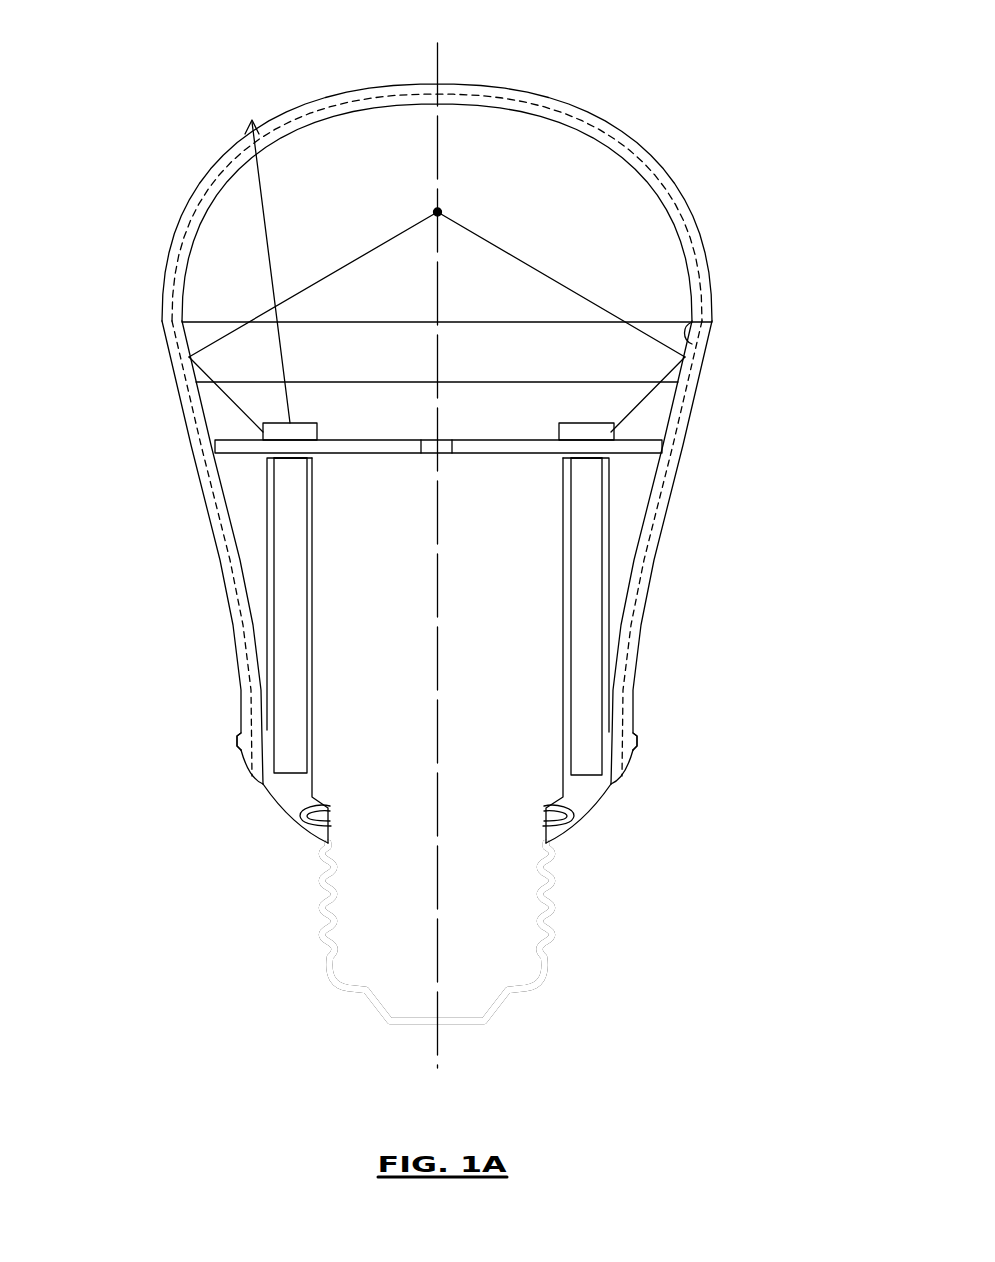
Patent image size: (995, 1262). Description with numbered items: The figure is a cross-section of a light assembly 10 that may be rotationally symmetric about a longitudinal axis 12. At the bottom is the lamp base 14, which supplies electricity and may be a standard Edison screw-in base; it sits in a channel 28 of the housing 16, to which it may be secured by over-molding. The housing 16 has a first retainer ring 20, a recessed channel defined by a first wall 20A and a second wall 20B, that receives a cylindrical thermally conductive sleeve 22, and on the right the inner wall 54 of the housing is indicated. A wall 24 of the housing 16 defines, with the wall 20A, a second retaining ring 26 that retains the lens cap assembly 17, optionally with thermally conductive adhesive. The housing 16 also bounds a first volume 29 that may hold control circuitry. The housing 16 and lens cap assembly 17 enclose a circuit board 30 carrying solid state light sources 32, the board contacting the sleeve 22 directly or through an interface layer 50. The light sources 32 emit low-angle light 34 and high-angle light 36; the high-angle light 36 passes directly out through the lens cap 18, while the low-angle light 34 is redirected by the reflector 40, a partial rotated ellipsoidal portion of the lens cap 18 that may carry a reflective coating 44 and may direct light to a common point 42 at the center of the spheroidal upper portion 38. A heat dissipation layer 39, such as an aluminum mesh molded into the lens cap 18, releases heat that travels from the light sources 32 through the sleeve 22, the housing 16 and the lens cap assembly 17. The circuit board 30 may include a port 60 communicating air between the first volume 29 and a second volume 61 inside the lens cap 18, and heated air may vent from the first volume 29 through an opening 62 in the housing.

The light assembly 10 is at (156, 120).
The longitudinal axis 12 is at (438, 58).
The lamp base 14 is at (553, 950).
The housing 16 is at (472, 581).
The lens cap assembly 17 is at (437, 175).
The lens cap 18 is at (744, 291).
The first retainer ring 20 is at (439, 668).
The first wall 20A is at (310, 694).
The second wall 20B is at (262, 697).
The thermally conductive sleeve 22 is at (288, 593).
The wall 24 is at (238, 748).
The second retaining ring 26 is at (253, 783).
The channel 28 is at (315, 800).
The first volume 29 is at (362, 745).
The circuit board 30 is at (438, 428).
The light sources 32 is at (307, 428).
The low-angle light 34 is at (254, 417).
The high-angle light 36 is at (253, 140).
The upper portion 38 is at (559, 101).
The heat dissipation layer 39 is at (651, 186).
The reflector 40 is at (447, 316).
The common point 42 is at (444, 212).
The reflective coating 44 is at (712, 322).
The interface layer 50 is at (297, 457).
The inner wall 54 is at (568, 583).
The port 60 is at (445, 453).
The second volume 61 is at (481, 302).
The opening 62 is at (305, 516).